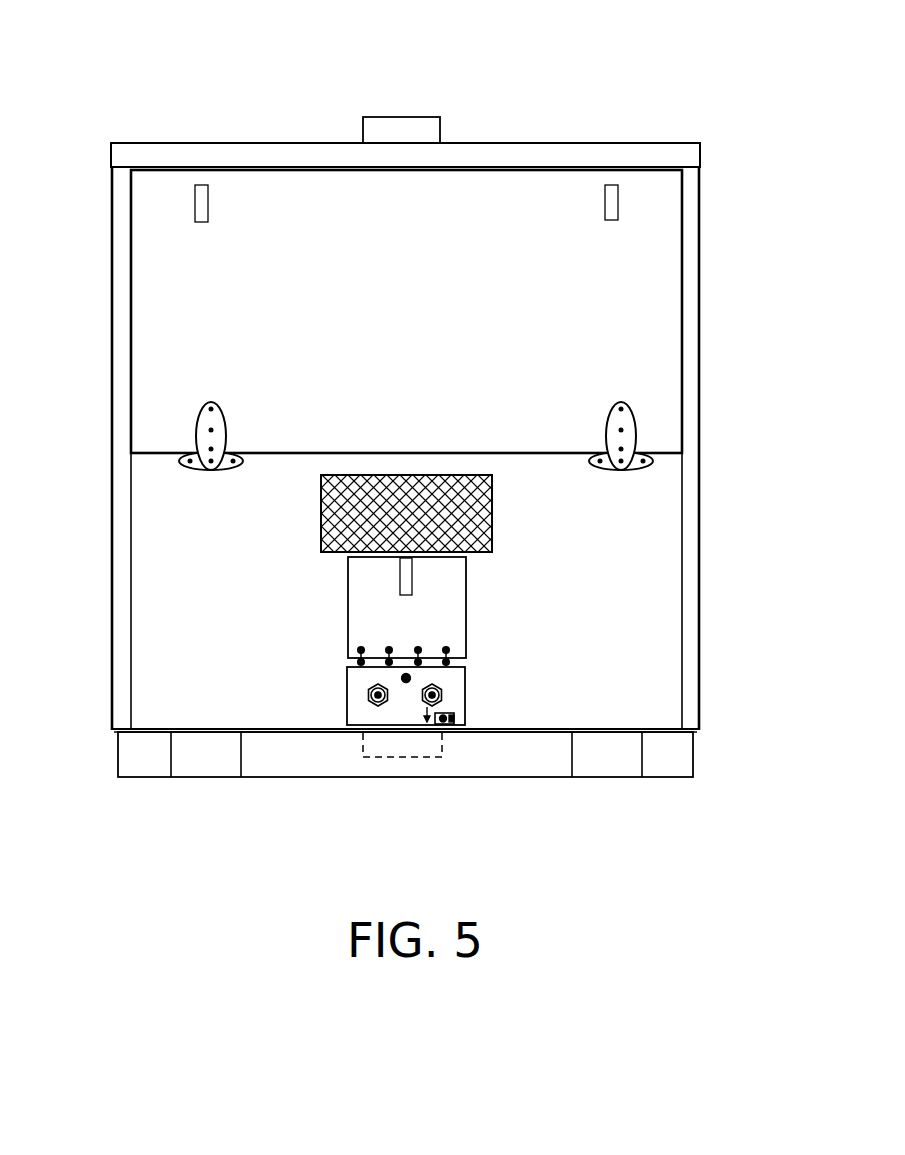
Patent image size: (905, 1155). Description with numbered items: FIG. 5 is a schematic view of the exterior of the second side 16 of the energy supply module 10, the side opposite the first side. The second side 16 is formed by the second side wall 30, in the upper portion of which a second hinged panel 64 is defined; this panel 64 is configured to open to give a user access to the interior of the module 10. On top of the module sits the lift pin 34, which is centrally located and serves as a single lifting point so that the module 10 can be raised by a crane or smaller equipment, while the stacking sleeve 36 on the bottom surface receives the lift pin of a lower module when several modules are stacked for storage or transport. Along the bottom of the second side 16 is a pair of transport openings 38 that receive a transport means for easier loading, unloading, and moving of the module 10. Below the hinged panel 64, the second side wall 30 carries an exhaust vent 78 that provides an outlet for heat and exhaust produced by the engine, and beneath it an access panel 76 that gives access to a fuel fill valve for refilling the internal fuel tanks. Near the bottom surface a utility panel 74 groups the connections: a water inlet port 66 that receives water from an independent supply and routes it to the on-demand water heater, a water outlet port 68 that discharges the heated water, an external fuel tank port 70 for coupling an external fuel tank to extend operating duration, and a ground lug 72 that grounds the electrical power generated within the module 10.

The energy supply module 10 is at (152, 80).
The lift pin 34 is at (402, 128).
The second hinged panel 64 is at (527, 205).
The second side wall 30 is at (644, 530).
The second side 16 is at (619, 620).
The exhaust vent 78 is at (327, 517).
The access panel 76 is at (358, 617).
The utility panel 74 is at (347, 682).
The water inlet port 66 is at (372, 702).
The water outlet port 68 is at (424, 704).
The external fuel tank port 70 is at (404, 683).
The ground lug 72 is at (450, 727).
The stacking sleeve 36 is at (425, 750).
The transport openings 38 is at (612, 763).